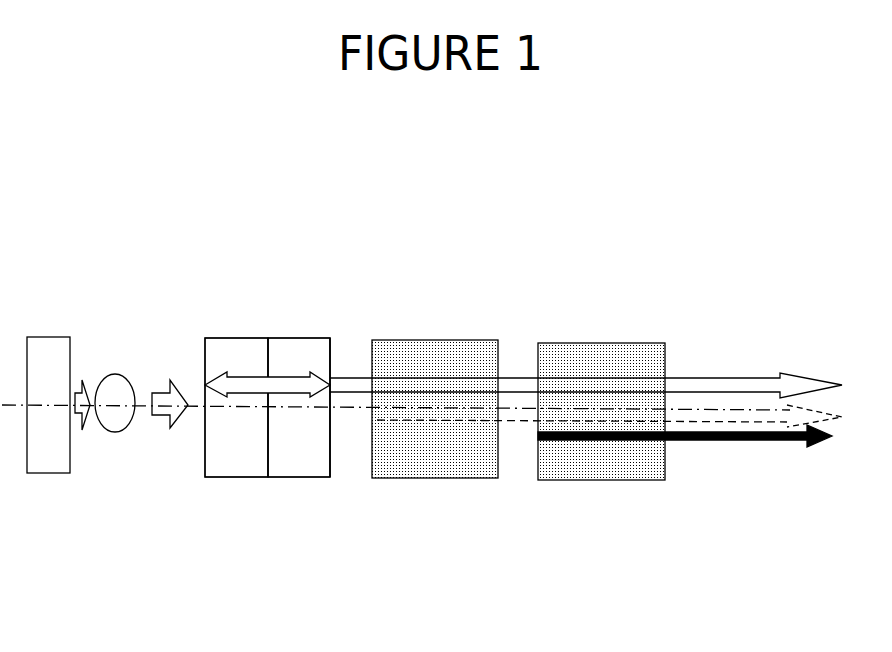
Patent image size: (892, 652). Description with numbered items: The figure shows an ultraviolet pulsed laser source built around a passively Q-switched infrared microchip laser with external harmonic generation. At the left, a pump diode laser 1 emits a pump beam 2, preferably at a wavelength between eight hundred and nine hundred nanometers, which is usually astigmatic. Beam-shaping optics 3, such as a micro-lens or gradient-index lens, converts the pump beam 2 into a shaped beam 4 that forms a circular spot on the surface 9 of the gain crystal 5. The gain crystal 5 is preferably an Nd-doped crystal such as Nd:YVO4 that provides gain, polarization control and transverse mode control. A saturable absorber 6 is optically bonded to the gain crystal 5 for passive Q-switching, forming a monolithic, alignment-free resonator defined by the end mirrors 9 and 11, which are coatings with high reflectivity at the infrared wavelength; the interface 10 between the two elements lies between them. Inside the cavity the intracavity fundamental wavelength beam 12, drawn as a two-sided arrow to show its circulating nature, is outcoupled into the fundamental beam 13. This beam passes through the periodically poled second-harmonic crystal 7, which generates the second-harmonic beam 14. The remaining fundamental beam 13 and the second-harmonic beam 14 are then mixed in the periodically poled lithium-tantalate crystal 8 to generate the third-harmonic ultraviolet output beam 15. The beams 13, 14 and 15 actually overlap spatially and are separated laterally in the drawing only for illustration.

The pump diode laser 1 is at (48, 345).
The pump beam 2 is at (82, 373).
The beam-shaping optics 3 is at (117, 357).
The shaped pump beam 4 is at (173, 367).
The gain crystal 5 is at (242, 358).
The saturable absorber 6 is at (305, 358).
The second-harmonic crystal 7 is at (428, 362).
The third-harmonic crystal 8 is at (595, 362).
The end mirror 9 is at (204, 459).
The interface between laser crystals 10 is at (267, 450).
The end mirror 11 is at (331, 457).
The intracavity fundamental wavelength beam 12 is at (288, 387).
The fundamental beam 13 is at (595, 381).
The second-harmonic beam 14 is at (626, 414).
The UV output beam 15 is at (700, 443).